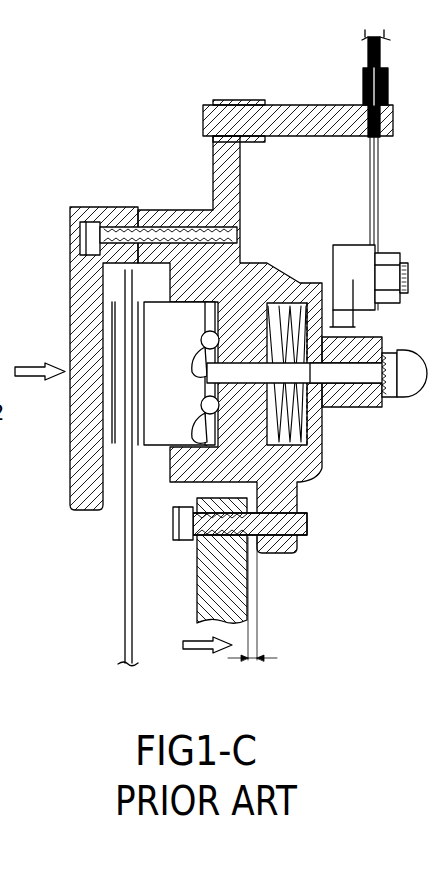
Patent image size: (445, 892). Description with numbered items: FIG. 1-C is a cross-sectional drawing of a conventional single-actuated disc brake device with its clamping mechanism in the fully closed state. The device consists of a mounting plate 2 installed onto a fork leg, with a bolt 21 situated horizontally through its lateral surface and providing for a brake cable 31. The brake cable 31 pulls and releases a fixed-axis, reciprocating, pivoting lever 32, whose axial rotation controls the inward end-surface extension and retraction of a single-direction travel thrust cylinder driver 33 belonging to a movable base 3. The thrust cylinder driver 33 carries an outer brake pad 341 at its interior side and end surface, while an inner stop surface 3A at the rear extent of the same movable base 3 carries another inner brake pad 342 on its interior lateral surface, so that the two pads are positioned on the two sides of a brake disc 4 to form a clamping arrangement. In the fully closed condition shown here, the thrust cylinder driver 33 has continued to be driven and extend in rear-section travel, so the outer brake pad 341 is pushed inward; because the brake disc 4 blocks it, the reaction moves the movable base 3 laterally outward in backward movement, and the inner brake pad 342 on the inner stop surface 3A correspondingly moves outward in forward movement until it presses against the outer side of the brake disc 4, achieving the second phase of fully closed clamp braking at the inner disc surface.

The mounting plate 2 is at (248, 600).
The bolt 21 is at (297, 550).
The movable base 3 is at (263, 270).
The inner stop surface 3A is at (82, 473).
The brake cable 31 is at (375, 187).
The pivoting lever 32 is at (355, 267).
The thrust cylinder driver 33 is at (183, 323).
The outer brake pad 341 is at (135, 423).
The inner brake pad 342 is at (120, 422).
The brake disc 4 is at (128, 585).